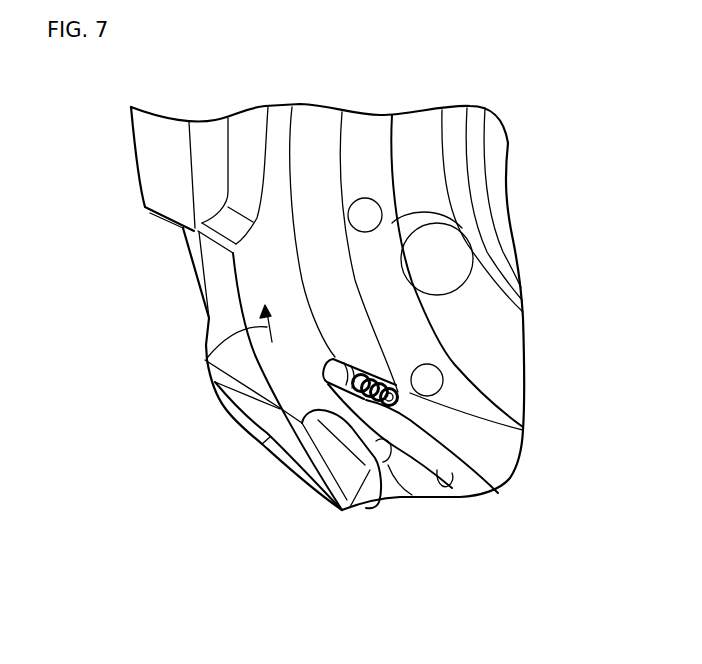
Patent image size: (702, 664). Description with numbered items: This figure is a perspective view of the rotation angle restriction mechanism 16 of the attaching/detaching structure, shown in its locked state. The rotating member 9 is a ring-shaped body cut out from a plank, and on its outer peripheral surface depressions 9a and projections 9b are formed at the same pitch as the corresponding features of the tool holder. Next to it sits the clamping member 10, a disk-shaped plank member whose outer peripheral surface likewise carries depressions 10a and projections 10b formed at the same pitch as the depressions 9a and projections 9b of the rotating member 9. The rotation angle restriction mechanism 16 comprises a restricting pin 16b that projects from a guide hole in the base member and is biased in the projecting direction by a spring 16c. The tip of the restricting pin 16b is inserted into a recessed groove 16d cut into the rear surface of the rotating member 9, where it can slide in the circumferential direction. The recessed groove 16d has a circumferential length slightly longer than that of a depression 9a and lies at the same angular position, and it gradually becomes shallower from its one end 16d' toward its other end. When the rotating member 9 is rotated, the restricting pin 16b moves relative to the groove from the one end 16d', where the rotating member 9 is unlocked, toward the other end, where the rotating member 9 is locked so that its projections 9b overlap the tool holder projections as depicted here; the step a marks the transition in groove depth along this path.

The rotating member 9 is at (213, 318).
The depressions 9a is at (238, 152).
The projections 9b is at (213, 278).
The clamping member 10 is at (217, 396).
The depressions 10a is at (188, 242).
The projections 10b is at (236, 415).
The step portion a is at (207, 358).
The rotation angle restriction mechanism 16 is at (274, 468).
The restricting pin 16b is at (367, 363).
The spring 16c is at (523, 428).
The recessed groove 16d is at (382, 479).
The one end of the recessed groove 16d' is at (432, 501).